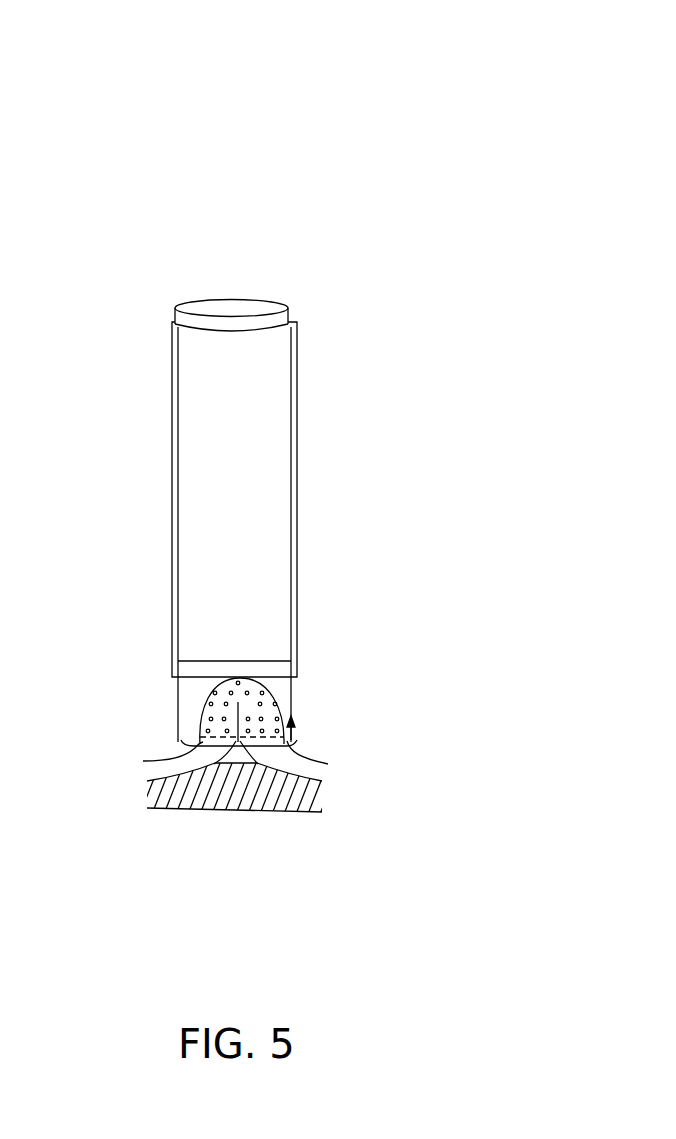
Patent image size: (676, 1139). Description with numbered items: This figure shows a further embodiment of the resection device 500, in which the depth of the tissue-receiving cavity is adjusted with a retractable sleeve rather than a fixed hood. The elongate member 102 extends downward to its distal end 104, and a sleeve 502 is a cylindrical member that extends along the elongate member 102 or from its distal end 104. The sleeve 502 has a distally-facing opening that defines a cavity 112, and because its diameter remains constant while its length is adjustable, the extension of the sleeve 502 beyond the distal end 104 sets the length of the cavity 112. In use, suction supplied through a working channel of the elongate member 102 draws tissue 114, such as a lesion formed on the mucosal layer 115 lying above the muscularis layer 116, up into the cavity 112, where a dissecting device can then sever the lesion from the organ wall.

The resection device 500 is at (468, 98).
The sleeve 502 is at (288, 306).
The elongate member 102 is at (305, 475).
The distal end 104 is at (285, 660).
The tissue 114 is at (207, 732).
The cavity 112 is at (293, 741).
The mucosal layer 115 is at (162, 758).
The muscularis layer 116 is at (155, 795).